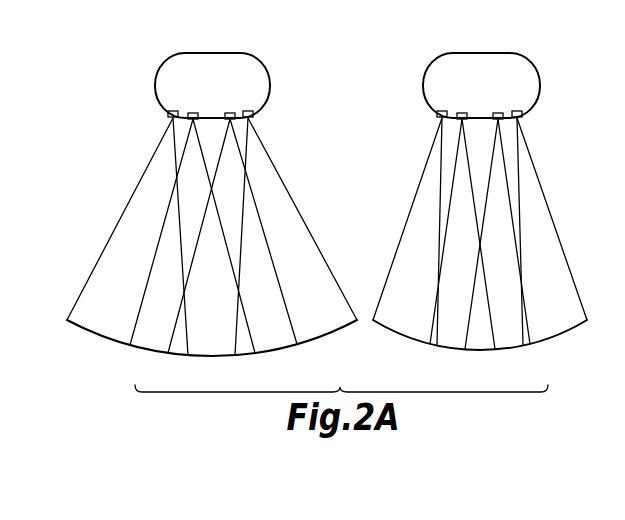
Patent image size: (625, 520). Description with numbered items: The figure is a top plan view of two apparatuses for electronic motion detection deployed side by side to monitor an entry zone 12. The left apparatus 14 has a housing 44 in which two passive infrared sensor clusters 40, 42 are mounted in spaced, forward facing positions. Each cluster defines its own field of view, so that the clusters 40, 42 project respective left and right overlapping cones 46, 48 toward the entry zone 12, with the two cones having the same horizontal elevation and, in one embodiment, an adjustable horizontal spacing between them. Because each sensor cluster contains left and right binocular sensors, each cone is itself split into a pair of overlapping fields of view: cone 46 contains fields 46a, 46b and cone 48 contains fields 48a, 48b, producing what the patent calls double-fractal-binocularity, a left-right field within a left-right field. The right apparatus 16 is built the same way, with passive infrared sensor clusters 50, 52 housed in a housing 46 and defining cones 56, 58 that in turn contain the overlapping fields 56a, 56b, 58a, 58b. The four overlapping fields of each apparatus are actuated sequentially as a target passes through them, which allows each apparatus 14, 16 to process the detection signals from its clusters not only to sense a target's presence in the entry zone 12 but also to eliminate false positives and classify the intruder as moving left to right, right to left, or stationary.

The entry zone 12 is at (205, 379).
The electronic motion apparatus 14 is at (205, 65).
The electronic motion apparatus 16 is at (481, 65).
The passive infrared sensor cluster 40 is at (187, 101).
The passive infrared sensor cluster 42 is at (237, 101).
The housing 44 is at (197, 55).
The cone 46 is at (269, 199).
The field of view 46a is at (122, 215).
The field of view 46b is at (187, 137).
The cone 48 is at (262, 241).
The field of view 48a is at (300, 215).
The field of view 48b is at (236, 137).
The passive infrared sensor cluster 50 is at (455, 101).
The passive infrared sensor cluster 52 is at (505, 101).
The cone 56 is at (430, 241).
The field 56a is at (409, 215).
The field 56b is at (457, 148).
The cone 58 is at (527, 241).
The field 58a is at (551, 215).
The field 58b is at (502, 148).